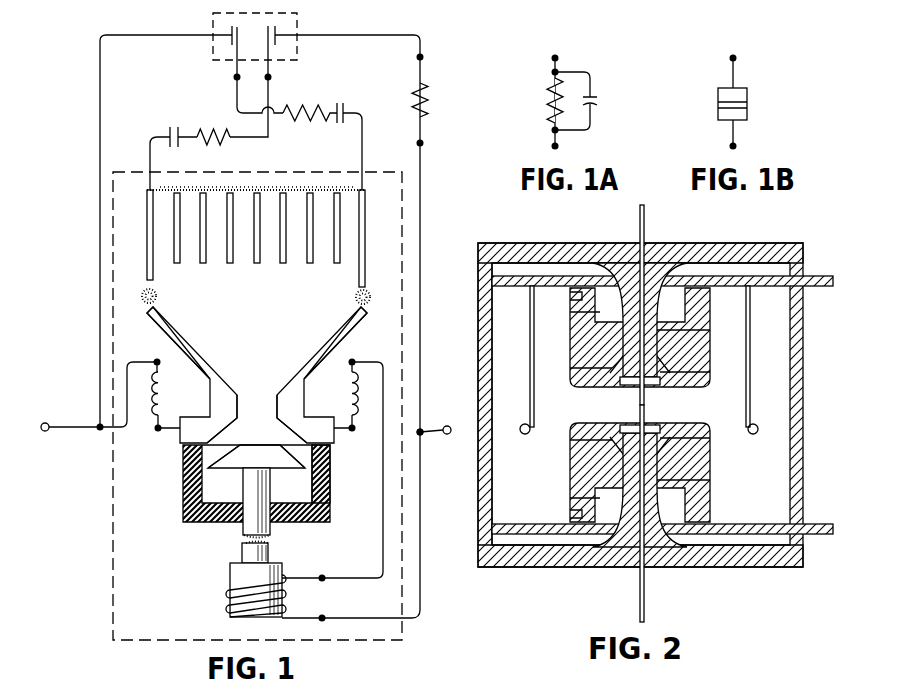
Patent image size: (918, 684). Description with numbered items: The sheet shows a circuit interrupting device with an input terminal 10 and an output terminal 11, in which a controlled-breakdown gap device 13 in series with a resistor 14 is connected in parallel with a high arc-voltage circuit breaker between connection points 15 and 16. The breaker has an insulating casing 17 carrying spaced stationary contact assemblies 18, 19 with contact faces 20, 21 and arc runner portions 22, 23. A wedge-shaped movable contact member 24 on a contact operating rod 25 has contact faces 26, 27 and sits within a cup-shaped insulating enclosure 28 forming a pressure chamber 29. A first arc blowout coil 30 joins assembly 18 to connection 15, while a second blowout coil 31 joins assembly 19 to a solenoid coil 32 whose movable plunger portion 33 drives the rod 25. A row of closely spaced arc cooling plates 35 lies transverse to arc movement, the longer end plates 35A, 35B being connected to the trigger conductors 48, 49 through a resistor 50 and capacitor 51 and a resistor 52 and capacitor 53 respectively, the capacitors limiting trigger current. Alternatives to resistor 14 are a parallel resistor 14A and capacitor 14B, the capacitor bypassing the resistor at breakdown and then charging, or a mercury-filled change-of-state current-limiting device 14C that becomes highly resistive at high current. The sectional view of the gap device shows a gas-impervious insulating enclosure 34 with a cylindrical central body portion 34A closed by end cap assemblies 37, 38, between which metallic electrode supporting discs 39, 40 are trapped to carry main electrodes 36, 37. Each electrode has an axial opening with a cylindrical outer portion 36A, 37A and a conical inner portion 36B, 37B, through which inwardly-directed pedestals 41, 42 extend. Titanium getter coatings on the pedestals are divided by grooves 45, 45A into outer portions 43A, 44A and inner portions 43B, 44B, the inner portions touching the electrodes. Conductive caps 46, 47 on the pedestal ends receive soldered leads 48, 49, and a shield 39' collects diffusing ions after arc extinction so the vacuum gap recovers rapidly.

In FIG. 1, the input terminal 10 is at (70, 412).
In FIG. 1, the output terminal 11 is at (442, 416).
In FIG. 1, the controlled-breakdown gap device 13 is at (298, 24).
In FIG. 2, the controlled-breakdown gap device 13 is at (728, 242).
In FIG. 1, the resistor 14 is at (425, 88).
In FIG. 1A, the resistor 14A is at (548, 101).
In FIG. 1A, the capacitor 14B is at (600, 96).
In FIG. 1B, the change-of-state current-limiting device 14C is at (748, 93).
In FIG. 1, the connection point 15 is at (100, 431).
In FIG. 1, the connection point 16 is at (426, 437).
In FIG. 1, the insulating casing or support 17 is at (402, 210).
In FIG. 1, the stationary contact assembly 18 is at (207, 393).
In FIG. 1, the stationary contact assembly 19 is at (305, 397).
In FIG. 1, the contact face 20 is at (238, 423).
In FIG. 1, the contact face 21 is at (284, 429).
In FIG. 1, the arc runner portion 22 is at (195, 350).
In FIG. 1, the arc runner portion 23 is at (333, 335).
In FIG. 1, the movable contact member 24 is at (256, 456).
In FIG. 1, the contact operating rod 25 is at (243, 530).
In FIG. 1, the contact face 26 is at (209, 470).
In FIG. 1, the contact face 27 is at (304, 470).
In FIG. 1, the insulating enclosure 28 is at (330, 501).
In FIG. 1, the pressure chamber 29 is at (330, 456).
In FIG. 1, the first arc blowout coil 30 is at (156, 421).
In FIG. 1, the second blowout coil 31 is at (353, 421).
In FIG. 1, the solenoid coil 32 is at (230, 601).
In FIG. 1, the movable plunger portion 33 is at (230, 571).
In FIG. 2, the insulating enclosure 34 is at (478, 505).
In FIG. 2, the cylindrical central body portion 34A is at (478, 356).
In FIG. 1, the arc cooling plates 35 is at (283, 264).
In FIG. 1, the end plate 35A is at (358, 281).
In FIG. 1, the end plate 35B is at (154, 278).
In FIG. 1, the main electrode 36 is at (230, 29).
In FIG. 2, the main electrode 36 is at (712, 359).
In FIG. 2, the cylindrical outer portion 36A is at (597, 312).
In FIG. 2, the conical inner portion 36B is at (610, 368).
In FIG. 1, the main electrode 37 is at (278, 42).
In FIG. 2, the main electrode 37 is at (548, 243).
In FIG. 2, the cylindrical outer portion 37A is at (587, 494).
In FIG. 2, the conical inner portion 37B is at (607, 441).
In FIG. 2, the end cap assembly 38 is at (557, 567).
In FIG. 1, the electrode supporting disc 39 is at (166, 231).
In FIG. 2, the electrode supporting disc 39 is at (662, 294).
In FIG. 2, the shield 39' is at (649, 360).
In FIG. 1, the electrode supporting disc 40 is at (356, 35).
In FIG. 2, the electrode supporting disc 40 is at (763, 524).
In FIG. 2, the pedestal portion 41 is at (677, 255).
In FIG. 2, the pedestal portion 42 is at (623, 546).
In FIG. 2, the coating portion 43A is at (700, 371).
In FIG. 2, the coating portion 43B is at (700, 331).
In FIG. 2, the coating portion 44A is at (667, 432).
In FIG. 2, the coating portion 44B is at (653, 478).
In FIG. 2, the groove 45 is at (623, 352).
In FIG. 2, the groove 45A is at (627, 461).
In FIG. 2, the conductive cap 46 is at (643, 386).
In FIG. 2, the conductive cap 47 is at (645, 425).
In FIG. 1, the conducting lead 48 is at (235, 64).
In FIG. 2, the conducting lead 48 is at (645, 217).
In FIG. 1, the conducting lead 49 is at (271, 64).
In FIG. 2, the conducting lead 49 is at (640, 604).
In FIG. 1, the resistor 50 is at (306, 106).
In FIG. 1, the capacitor 51 is at (346, 109).
In FIG. 1, the resistor 52 is at (231, 138).
In FIG. 1, the capacitor 53 is at (178, 128).